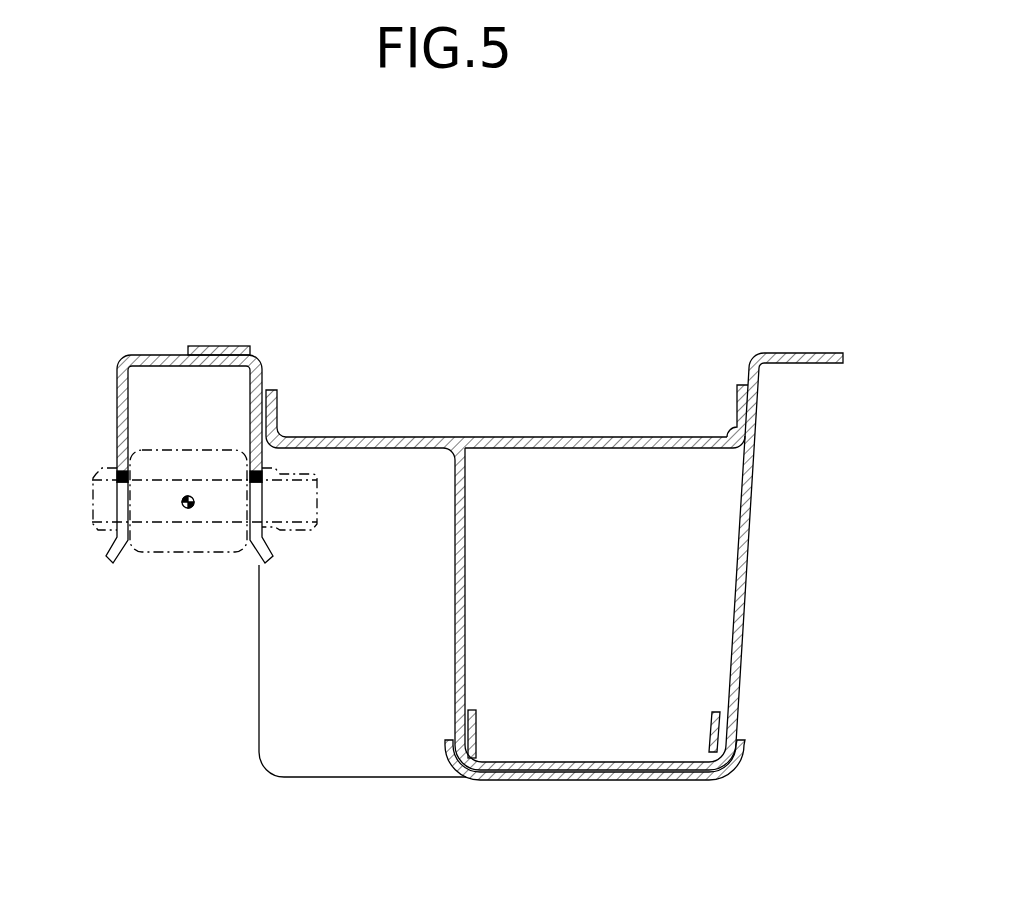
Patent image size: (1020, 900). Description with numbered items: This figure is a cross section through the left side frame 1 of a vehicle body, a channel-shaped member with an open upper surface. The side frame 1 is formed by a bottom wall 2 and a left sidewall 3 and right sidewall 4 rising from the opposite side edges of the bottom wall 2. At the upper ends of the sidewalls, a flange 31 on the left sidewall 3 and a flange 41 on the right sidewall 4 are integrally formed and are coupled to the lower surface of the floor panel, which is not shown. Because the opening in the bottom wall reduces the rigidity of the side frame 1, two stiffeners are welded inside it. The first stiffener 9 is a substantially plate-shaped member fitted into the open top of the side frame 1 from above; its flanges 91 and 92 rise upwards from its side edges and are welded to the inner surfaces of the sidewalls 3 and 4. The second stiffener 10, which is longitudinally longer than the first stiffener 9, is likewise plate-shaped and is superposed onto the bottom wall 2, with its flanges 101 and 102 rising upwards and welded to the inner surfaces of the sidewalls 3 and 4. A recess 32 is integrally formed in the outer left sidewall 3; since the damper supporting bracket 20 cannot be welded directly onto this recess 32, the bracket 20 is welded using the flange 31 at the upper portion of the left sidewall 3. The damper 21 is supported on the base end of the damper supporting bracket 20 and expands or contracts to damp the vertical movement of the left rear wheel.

The side frame 1 is at (606, 520).
The bottom wall 2 is at (588, 781).
The left sidewall 3 is at (452, 572).
The right sidewall 4 is at (739, 611).
The first stiffener 9 is at (507, 367).
The second stiffener 10 is at (610, 760).
The damper supporting bracket 20 is at (117, 428).
The damper 21 is at (173, 550).
The flange 31 is at (203, 346).
The recess 32 is at (358, 742).
The flange 41 is at (798, 319).
The flange 91 is at (281, 408).
The flange 92 is at (696, 410).
The flange 101 is at (477, 725).
The flange 102 is at (710, 733).